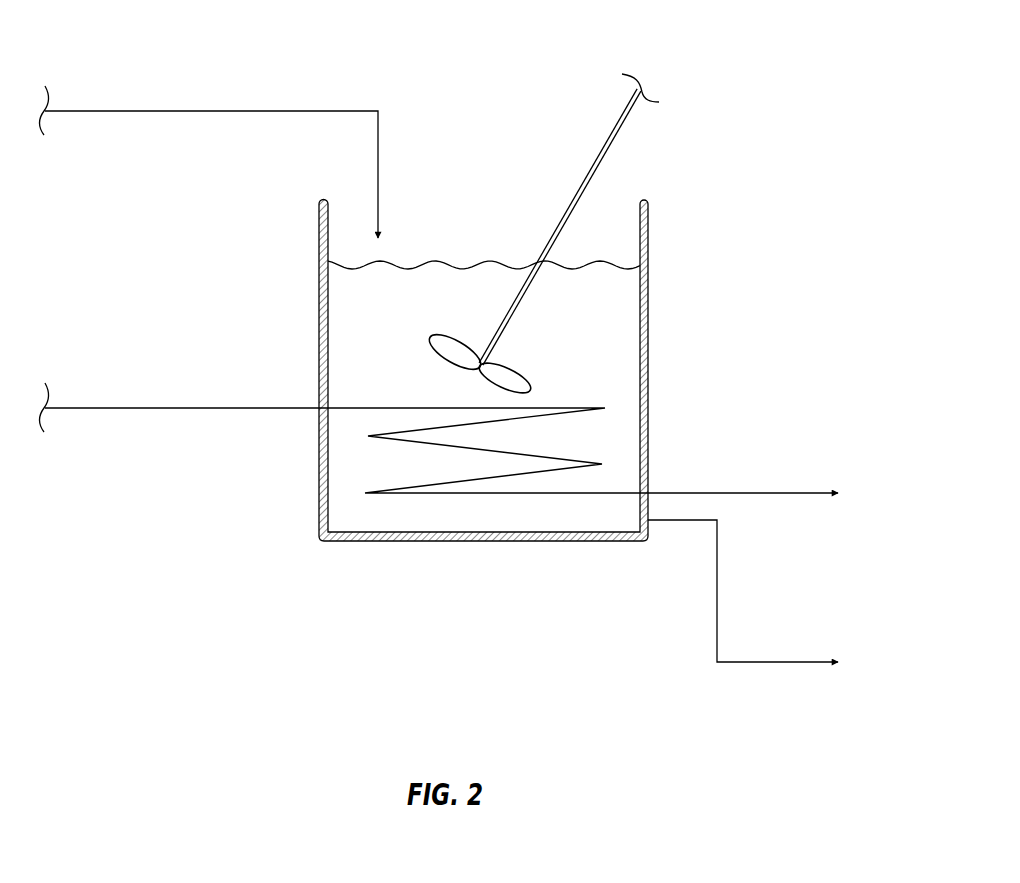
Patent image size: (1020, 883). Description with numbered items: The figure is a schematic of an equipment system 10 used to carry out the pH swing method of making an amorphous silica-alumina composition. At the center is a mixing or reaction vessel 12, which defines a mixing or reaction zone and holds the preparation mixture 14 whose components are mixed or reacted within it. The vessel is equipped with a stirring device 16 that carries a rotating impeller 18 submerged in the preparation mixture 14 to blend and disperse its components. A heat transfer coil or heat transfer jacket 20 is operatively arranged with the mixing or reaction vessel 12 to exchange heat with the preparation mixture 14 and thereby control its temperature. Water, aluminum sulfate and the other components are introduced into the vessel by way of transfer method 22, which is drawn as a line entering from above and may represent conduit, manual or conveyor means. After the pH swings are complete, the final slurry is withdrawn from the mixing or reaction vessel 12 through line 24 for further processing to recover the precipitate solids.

The equipment system 10 is at (800, 62).
The mixing or reaction vessel 12 is at (650, 242).
The preparation mixture 14 is at (358, 358).
The stirring device 16 is at (618, 167).
The rotating impeller 18 is at (514, 372).
The heat transfer coil or heat transfer jacket 20 is at (193, 407).
The transfer method 22 is at (178, 110).
The line 24 is at (718, 590).